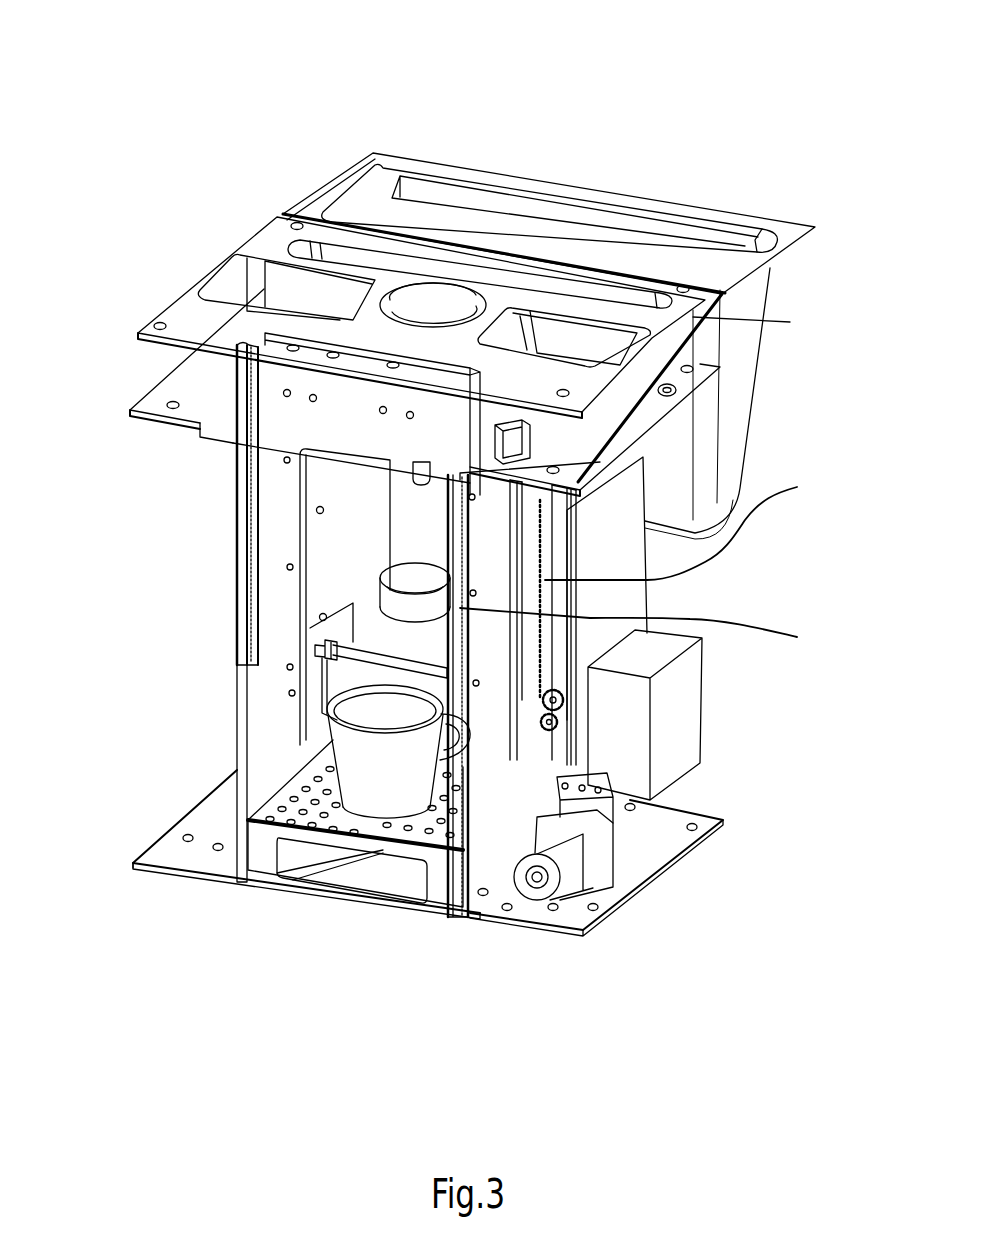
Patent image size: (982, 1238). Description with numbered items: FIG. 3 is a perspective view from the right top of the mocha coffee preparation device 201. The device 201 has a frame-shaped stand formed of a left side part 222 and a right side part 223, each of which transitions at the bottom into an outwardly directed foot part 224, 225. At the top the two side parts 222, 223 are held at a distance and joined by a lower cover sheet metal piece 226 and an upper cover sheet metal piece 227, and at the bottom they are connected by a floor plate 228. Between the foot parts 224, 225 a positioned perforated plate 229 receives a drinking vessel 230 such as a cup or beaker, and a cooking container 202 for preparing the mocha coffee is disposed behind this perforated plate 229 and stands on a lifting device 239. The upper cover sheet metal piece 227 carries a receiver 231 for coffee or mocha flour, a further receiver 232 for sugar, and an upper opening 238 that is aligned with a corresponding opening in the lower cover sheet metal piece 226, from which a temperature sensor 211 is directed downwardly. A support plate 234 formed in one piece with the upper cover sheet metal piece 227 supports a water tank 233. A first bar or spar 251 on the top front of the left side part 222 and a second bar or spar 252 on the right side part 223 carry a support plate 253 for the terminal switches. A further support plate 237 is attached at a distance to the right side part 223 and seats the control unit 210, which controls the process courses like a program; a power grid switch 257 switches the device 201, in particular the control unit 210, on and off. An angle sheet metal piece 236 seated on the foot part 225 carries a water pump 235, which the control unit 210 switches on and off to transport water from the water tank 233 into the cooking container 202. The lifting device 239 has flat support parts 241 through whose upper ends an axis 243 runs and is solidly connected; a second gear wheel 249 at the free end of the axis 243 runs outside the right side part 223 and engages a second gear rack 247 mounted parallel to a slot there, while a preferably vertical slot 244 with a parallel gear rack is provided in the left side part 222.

The device 201 is at (527, 112).
The cooking container 202 is at (437, 652).
The control unit 210 is at (690, 716).
The temperature sensor 211 is at (417, 474).
The left side part 222 is at (253, 724).
The right side part 223 is at (477, 913).
The foot part 224 is at (155, 858).
The foot part 225 is at (657, 863).
The lower cover sheet metal piece 226 is at (153, 403).
The upper cover sheet metal piece 227 is at (170, 313).
The floor plate 228 is at (343, 882).
The positioned perforated plate 229 is at (393, 848).
The drinking vessel 230 is at (402, 781).
The receiver 231 is at (252, 275).
The further receiver 232 is at (617, 347).
The water tank 233 is at (570, 232).
The support plate 234 is at (337, 193).
The water pump 235 is at (608, 836).
The angle sheet metal piece 236 is at (650, 880).
The support plate 237 is at (630, 603).
The upper opening 238 is at (447, 303).
The lifting device 239 is at (360, 612).
The support part 241 is at (323, 717).
The axis 243 is at (307, 684).
The slot 244 is at (305, 500).
The second gear rack 247 is at (693, 588).
The second gear wheel 249 is at (553, 722).
The first bar or spar 251 is at (242, 470).
The second bar or spar 252 is at (651, 631).
The support plate 253 is at (372, 429).
The power grid switch 257 is at (512, 433).